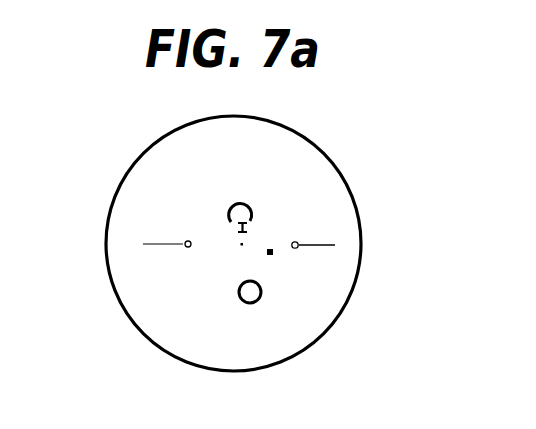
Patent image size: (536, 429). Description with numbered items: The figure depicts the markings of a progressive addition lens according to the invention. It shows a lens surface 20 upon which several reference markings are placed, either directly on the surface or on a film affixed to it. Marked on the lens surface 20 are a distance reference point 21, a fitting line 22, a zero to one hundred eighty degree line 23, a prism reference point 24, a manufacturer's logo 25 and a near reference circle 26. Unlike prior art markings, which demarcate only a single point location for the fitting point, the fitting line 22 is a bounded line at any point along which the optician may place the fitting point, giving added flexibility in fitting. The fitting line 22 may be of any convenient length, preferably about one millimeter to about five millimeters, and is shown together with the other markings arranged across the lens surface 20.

The lens surface 20 is at (342, 142).
The distance reference point 21 is at (252, 208).
The fitting line 22 is at (244, 232).
The 0–180 degree line 23 is at (332, 245).
The prism reference point 24 is at (296, 248).
The manufacturer's logo 25 is at (273, 256).
The near reference circle 26 is at (260, 301).